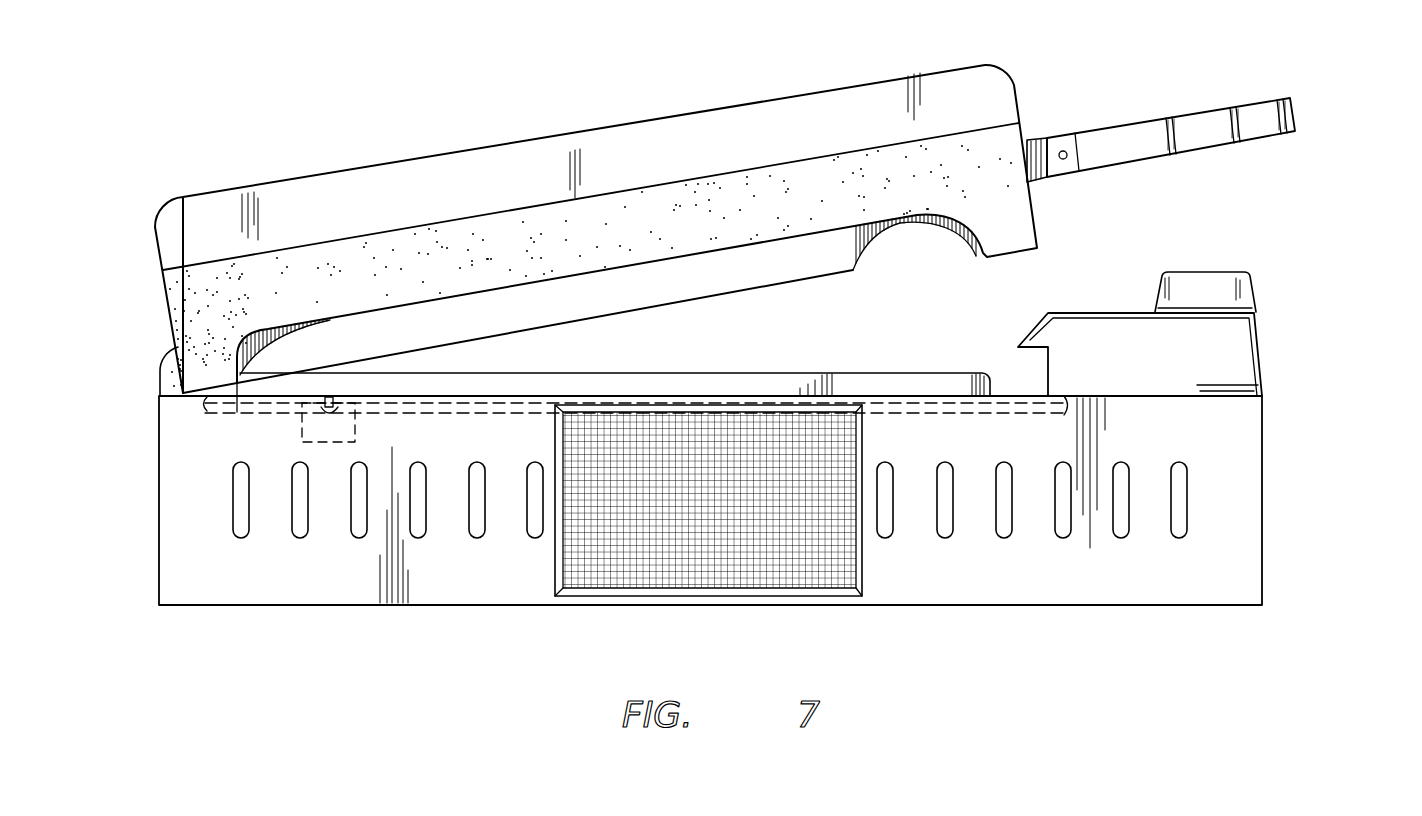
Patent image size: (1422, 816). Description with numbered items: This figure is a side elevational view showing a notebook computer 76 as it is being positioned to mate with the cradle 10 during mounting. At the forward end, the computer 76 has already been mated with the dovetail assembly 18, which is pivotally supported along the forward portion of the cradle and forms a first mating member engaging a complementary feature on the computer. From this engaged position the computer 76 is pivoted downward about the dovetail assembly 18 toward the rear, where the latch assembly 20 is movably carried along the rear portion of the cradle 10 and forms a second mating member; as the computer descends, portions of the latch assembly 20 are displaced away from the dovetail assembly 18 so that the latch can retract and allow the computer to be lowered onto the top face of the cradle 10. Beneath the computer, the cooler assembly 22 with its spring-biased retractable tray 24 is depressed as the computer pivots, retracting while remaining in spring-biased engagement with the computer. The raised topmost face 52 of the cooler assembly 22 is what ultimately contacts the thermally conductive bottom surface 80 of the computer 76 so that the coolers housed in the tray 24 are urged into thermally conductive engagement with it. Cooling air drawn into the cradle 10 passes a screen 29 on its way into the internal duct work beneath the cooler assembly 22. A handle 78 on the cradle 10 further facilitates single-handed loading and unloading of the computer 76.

The cradle 10 is at (1295, 535).
The dovetail assembly 18 is at (148, 370).
The latch assembly 20 is at (1300, 340).
The cooler assembly 22 is at (793, 350).
The retractable tray 24 is at (240, 417).
The screen 29 is at (600, 596).
The raised topmost face 52 is at (620, 373).
The computer 76 is at (1052, 72).
The handle 78 is at (1250, 100).
The bottom surface 80 is at (473, 338).